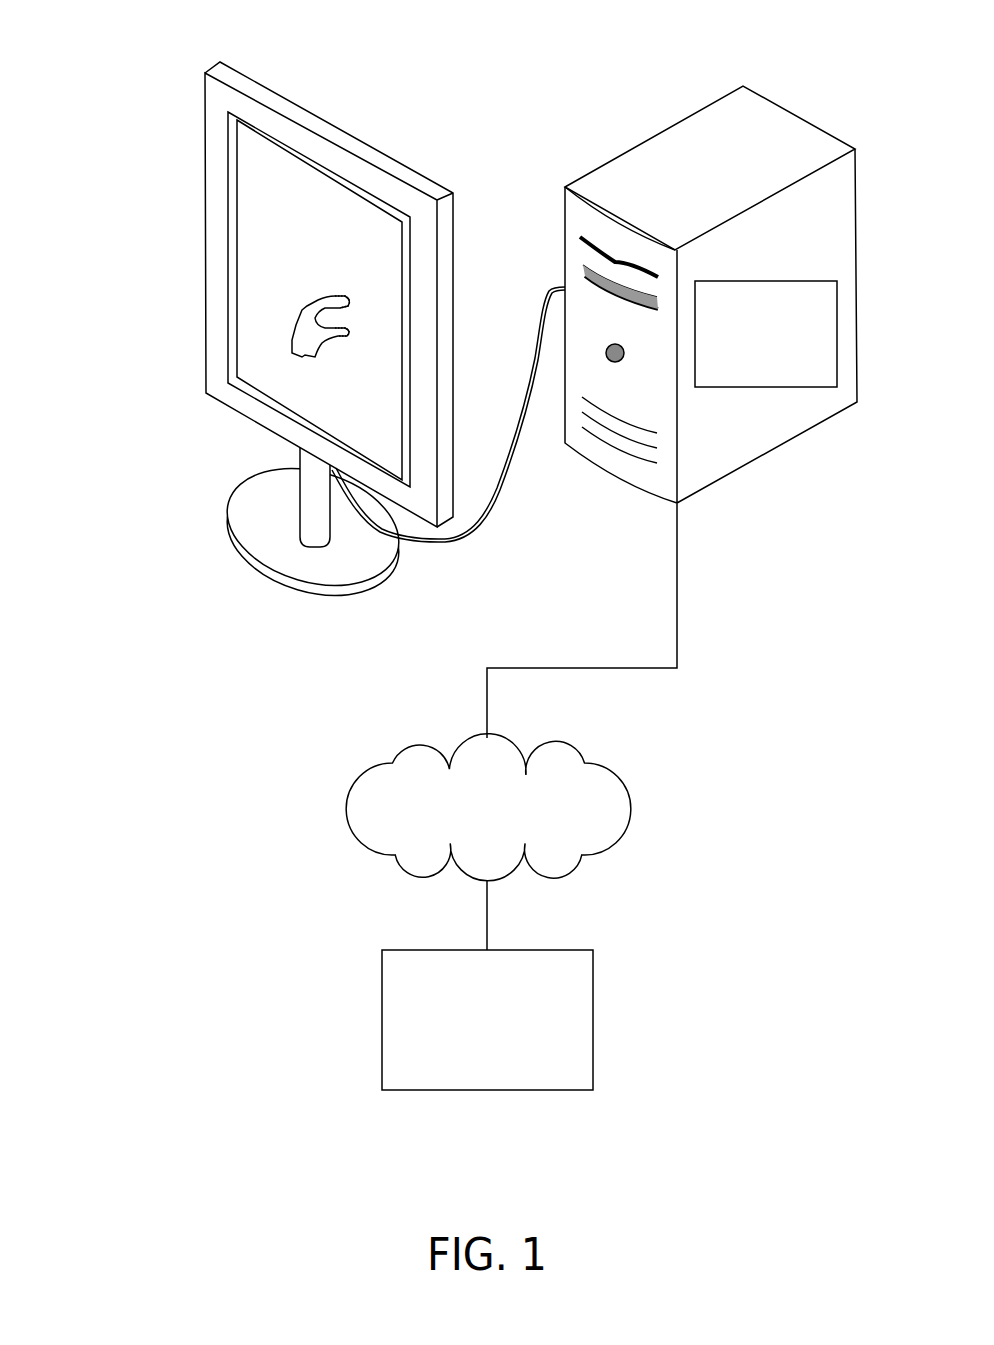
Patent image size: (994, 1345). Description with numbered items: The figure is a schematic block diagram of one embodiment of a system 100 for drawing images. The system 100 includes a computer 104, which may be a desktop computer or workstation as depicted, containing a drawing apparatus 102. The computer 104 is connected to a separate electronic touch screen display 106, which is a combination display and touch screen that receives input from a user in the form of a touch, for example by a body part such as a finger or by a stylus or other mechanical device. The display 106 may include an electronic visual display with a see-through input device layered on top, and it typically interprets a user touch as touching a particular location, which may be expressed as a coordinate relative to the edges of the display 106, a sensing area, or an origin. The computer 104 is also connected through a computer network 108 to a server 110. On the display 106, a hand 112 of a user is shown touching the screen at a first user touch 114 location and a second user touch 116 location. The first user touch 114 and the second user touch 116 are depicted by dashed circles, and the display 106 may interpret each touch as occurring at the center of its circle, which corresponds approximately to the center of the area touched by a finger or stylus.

The system for drawing images 100 is at (112, 49).
The drawing apparatus 102 is at (766, 334).
The computer 104 is at (857, 303).
The electronic touch screen display 106 is at (206, 263).
The computer network 108 is at (488, 807).
The server 110 is at (487, 1020).
The hand 112 is at (304, 310).
The first user touch 114 is at (352, 328).
The second user touch 116 is at (348, 298).